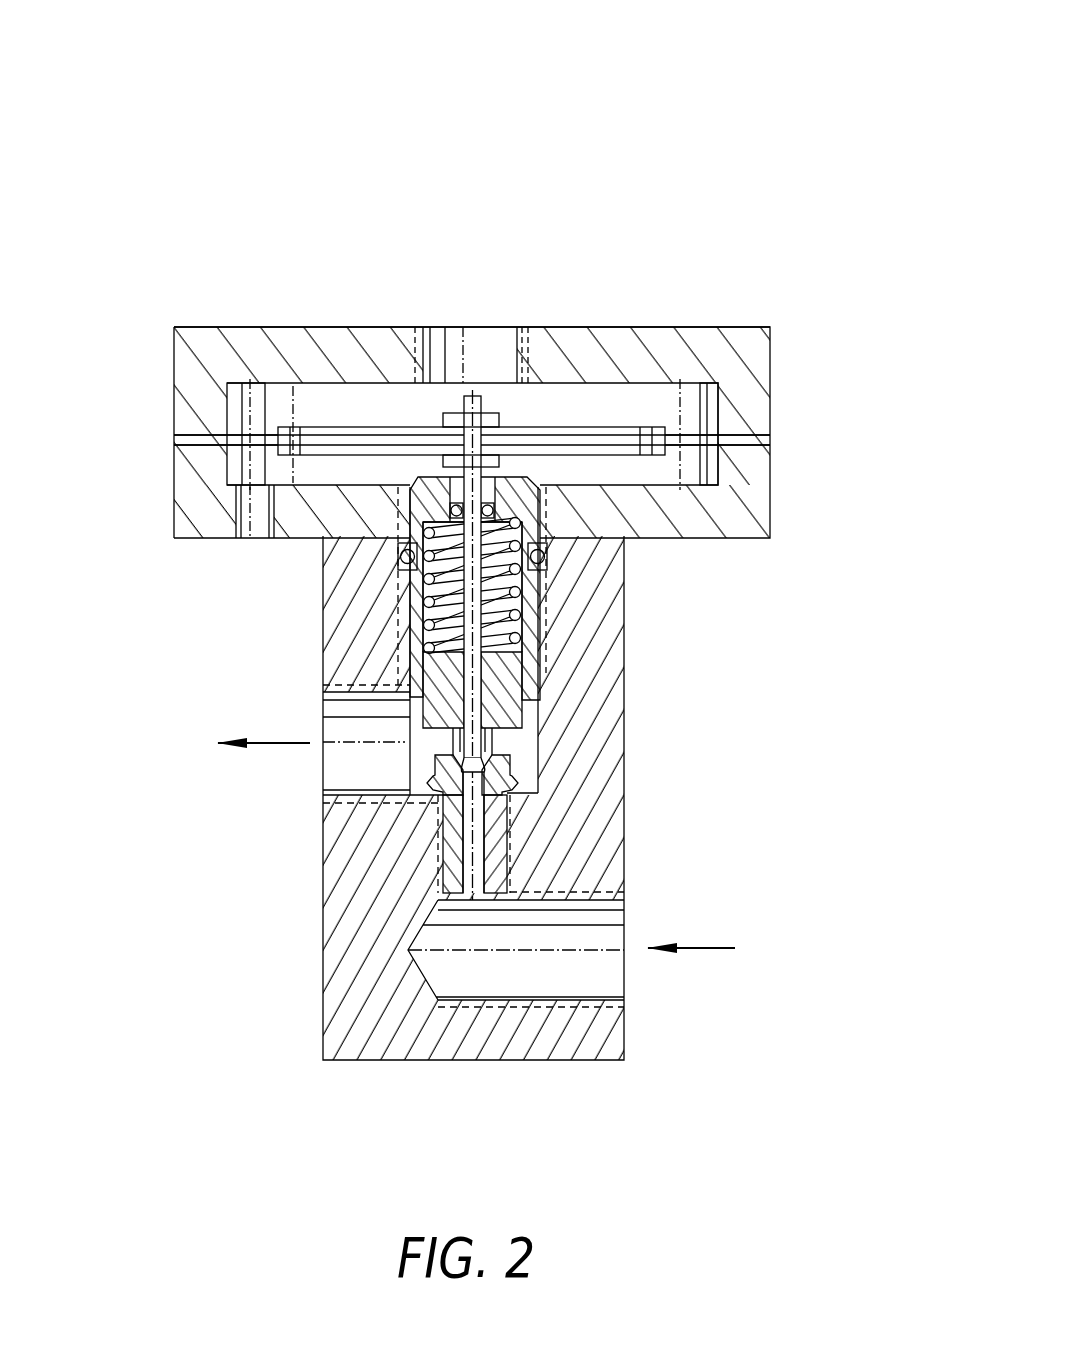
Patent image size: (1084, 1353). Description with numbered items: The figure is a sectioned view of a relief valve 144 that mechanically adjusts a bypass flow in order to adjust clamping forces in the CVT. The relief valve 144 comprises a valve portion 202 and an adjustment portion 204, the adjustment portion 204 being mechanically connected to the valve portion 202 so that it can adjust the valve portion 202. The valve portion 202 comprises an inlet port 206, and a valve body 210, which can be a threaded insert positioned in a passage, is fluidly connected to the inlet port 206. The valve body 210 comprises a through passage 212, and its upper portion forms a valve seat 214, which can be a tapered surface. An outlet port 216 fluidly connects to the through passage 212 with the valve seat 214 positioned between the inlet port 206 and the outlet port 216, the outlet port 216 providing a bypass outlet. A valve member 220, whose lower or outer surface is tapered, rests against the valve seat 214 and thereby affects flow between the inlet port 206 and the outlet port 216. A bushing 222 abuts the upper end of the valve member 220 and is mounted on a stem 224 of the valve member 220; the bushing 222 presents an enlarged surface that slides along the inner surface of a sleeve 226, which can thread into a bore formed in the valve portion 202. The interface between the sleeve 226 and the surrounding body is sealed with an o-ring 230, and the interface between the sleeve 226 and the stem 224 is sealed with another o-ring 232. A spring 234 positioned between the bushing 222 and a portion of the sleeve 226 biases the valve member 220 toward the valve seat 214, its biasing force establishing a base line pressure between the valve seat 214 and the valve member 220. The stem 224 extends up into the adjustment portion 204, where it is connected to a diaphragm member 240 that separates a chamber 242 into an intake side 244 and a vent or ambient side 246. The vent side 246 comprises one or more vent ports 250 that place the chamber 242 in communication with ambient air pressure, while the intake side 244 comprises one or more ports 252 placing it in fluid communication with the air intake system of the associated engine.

The relief valve 144 is at (706, 118).
The valve portion 202 is at (293, 924).
The adjustment portion 204 is at (445, 232).
The inlet port 206 is at (630, 927).
The valve body 210 is at (502, 830).
The through passage 212 is at (468, 831).
The valve seat 214 is at (512, 765).
The outlet port 216 is at (303, 765).
The valve member 220 is at (494, 740).
The bushing 222 is at (444, 708).
The stem 224 is at (535, 489).
The sleeve 226 is at (422, 654).
The o-ring 230 is at (548, 560).
The o-ring 232 is at (456, 495).
The spring 234 is at (540, 600).
The diaphragm member 240 is at (680, 414).
The chamber 242 is at (240, 378).
The intake side 244 is at (290, 396).
The vent side 246 is at (238, 468).
The vent port 250 is at (240, 527).
The port 252 is at (477, 325).